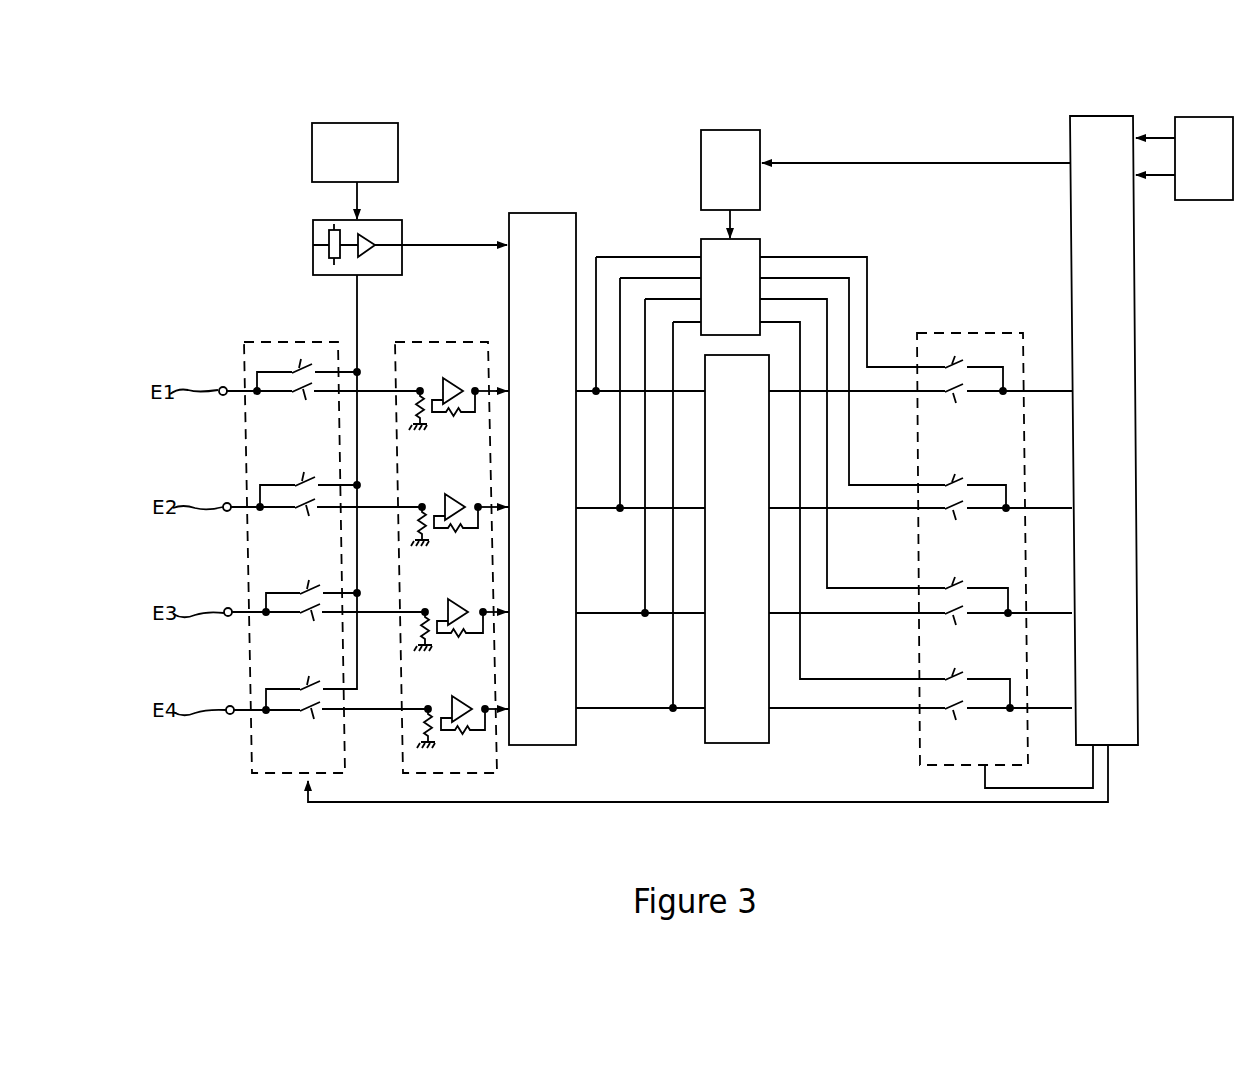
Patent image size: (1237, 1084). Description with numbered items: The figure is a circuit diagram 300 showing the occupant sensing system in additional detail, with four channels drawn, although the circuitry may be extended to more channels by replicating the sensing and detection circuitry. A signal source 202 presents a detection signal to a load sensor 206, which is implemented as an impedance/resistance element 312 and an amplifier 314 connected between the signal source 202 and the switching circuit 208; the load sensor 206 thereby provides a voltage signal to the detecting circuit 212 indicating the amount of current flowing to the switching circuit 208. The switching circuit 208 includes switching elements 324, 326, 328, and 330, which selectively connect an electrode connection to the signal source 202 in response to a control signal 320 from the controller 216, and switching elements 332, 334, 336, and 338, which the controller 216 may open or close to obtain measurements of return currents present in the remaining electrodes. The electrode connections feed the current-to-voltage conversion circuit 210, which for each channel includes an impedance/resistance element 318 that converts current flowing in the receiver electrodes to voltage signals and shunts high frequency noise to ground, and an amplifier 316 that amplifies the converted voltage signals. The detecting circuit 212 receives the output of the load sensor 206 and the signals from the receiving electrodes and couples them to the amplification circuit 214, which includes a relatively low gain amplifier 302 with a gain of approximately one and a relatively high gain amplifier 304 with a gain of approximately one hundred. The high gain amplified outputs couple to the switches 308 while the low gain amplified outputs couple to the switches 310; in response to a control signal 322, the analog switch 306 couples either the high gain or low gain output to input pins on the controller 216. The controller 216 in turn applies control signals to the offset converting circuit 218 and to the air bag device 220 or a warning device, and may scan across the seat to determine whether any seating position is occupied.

The signal source 202 is at (312, 148).
The load sensor 206 is at (369, 245).
The switching circuit 208 is at (279, 330).
The current-to-voltage conversion circuit 210 is at (423, 340).
The detecting circuit 212 is at (536, 212).
The amplification circuit 214 is at (817, 242).
The controller 216 is at (1087, 116).
The offset converting circuit 218 is at (730, 130).
The air bag device 220 is at (1200, 117).
The circuit diagram 300 is at (297, 883).
The low gain amplifier 302 is at (742, 745).
The high gain amplifier 304 is at (701, 238).
The analog switch 306 is at (980, 333).
The switching elements 308 is at (980, 522).
The switching elements 310 is at (966, 567).
The impedance/resistance element 312 is at (330, 258).
The amplifier 314 is at (372, 235).
The amplifier 316 is at (455, 367).
The impedance/resistance element 318 is at (417, 430).
The control signal 320 is at (1110, 773).
The control signal 322 is at (985, 768).
The switching element 324 is at (307, 363).
The switching element 326 is at (308, 475).
The switching element 328 is at (309, 586).
The switching element 330 is at (291, 683).
The switching element 332 is at (290, 405).
The switching element 334 is at (292, 522).
The switching element 336 is at (299, 628).
The switching element 338 is at (301, 727).